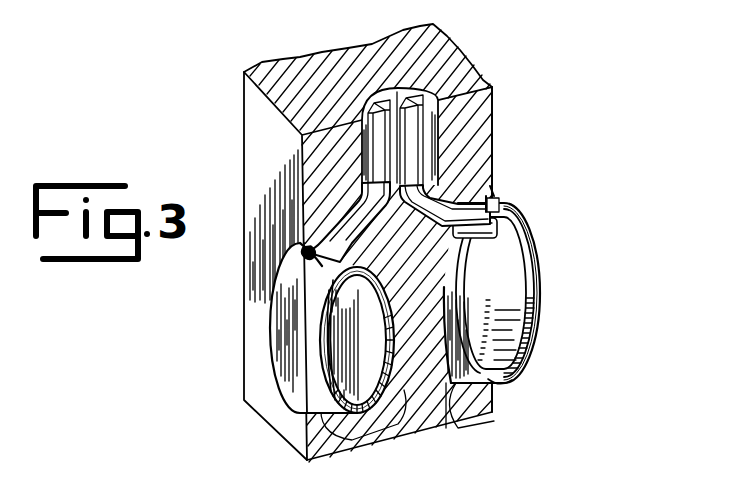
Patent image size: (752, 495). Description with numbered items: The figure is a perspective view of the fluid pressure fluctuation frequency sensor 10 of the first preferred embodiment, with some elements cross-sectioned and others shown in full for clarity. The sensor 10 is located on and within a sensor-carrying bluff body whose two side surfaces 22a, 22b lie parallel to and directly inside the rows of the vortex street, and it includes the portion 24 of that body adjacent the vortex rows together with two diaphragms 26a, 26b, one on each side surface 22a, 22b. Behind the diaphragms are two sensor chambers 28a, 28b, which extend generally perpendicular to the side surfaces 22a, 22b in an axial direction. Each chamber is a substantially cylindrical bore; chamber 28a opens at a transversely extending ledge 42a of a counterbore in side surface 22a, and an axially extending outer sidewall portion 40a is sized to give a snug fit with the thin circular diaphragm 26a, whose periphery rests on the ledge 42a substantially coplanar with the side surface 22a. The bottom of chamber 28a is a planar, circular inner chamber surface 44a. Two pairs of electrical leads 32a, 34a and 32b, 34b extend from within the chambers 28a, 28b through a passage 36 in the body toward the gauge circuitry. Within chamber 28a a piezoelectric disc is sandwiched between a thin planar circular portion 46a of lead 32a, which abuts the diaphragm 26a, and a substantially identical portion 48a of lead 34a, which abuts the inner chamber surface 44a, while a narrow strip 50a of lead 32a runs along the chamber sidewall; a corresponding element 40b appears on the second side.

The fluid pressure fluctuation frequency sensor 10 is at (564, 221).
The side surface 22a is at (494, 100).
The side surface 22b is at (257, 104).
The portion of the body 24 is at (437, 53).
The diaphragm 26a is at (540, 318).
The diaphragm 26b is at (300, 312).
The sensor chamber 28a is at (505, 197).
The sensor chamber 28b is at (320, 262).
The electrical lead 32a is at (468, 242).
The electrical lead 32b is at (323, 372).
The electrical lead 34a is at (462, 415).
The electrical lead 34b is at (300, 452).
The passage 36 is at (383, 84).
The outer sidewall portion 40a is at (496, 198).
The left flange 40b is at (308, 252).
The ledge 42a is at (499, 208).
The inner chamber surface 44a is at (500, 278).
The lead portion 46a is at (540, 349).
The lead portion 48a is at (512, 378).
The narrow strip 50a is at (494, 186).